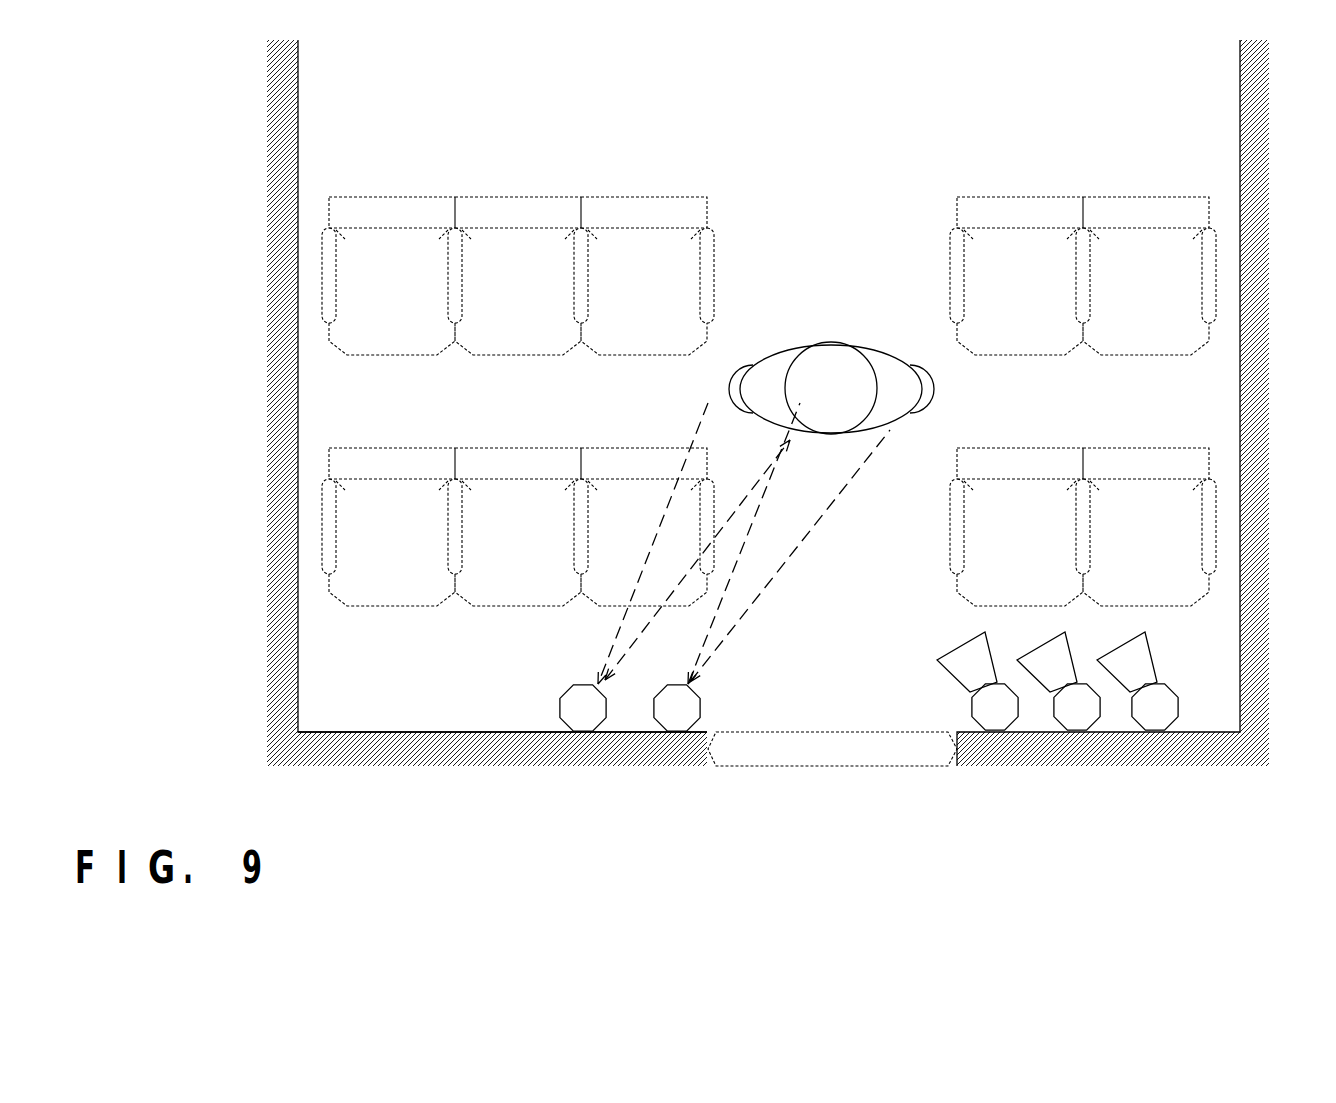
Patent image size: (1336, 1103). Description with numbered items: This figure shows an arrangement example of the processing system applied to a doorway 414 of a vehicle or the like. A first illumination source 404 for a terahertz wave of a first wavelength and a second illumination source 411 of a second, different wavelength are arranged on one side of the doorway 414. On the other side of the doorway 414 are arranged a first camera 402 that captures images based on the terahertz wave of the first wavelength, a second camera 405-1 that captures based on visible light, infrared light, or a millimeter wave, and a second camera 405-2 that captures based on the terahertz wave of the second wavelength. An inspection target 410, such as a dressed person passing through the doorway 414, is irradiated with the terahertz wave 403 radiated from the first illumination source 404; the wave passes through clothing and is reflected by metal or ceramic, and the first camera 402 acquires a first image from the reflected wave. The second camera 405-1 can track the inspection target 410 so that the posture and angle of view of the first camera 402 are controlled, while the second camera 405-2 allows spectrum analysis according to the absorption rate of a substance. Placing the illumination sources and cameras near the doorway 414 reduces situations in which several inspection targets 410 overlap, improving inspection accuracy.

The inspection target 410 is at (830, 343).
The terahertz wave 403 is at (744, 543).
The second illumination source 411 is at (587, 717).
The first illumination source 404 is at (638, 732).
The doorway 414 is at (797, 745).
The first camera 402 is at (1008, 727).
The second camera 405-1 is at (1170, 705).
The second camera 405-2 is at (1090, 727).